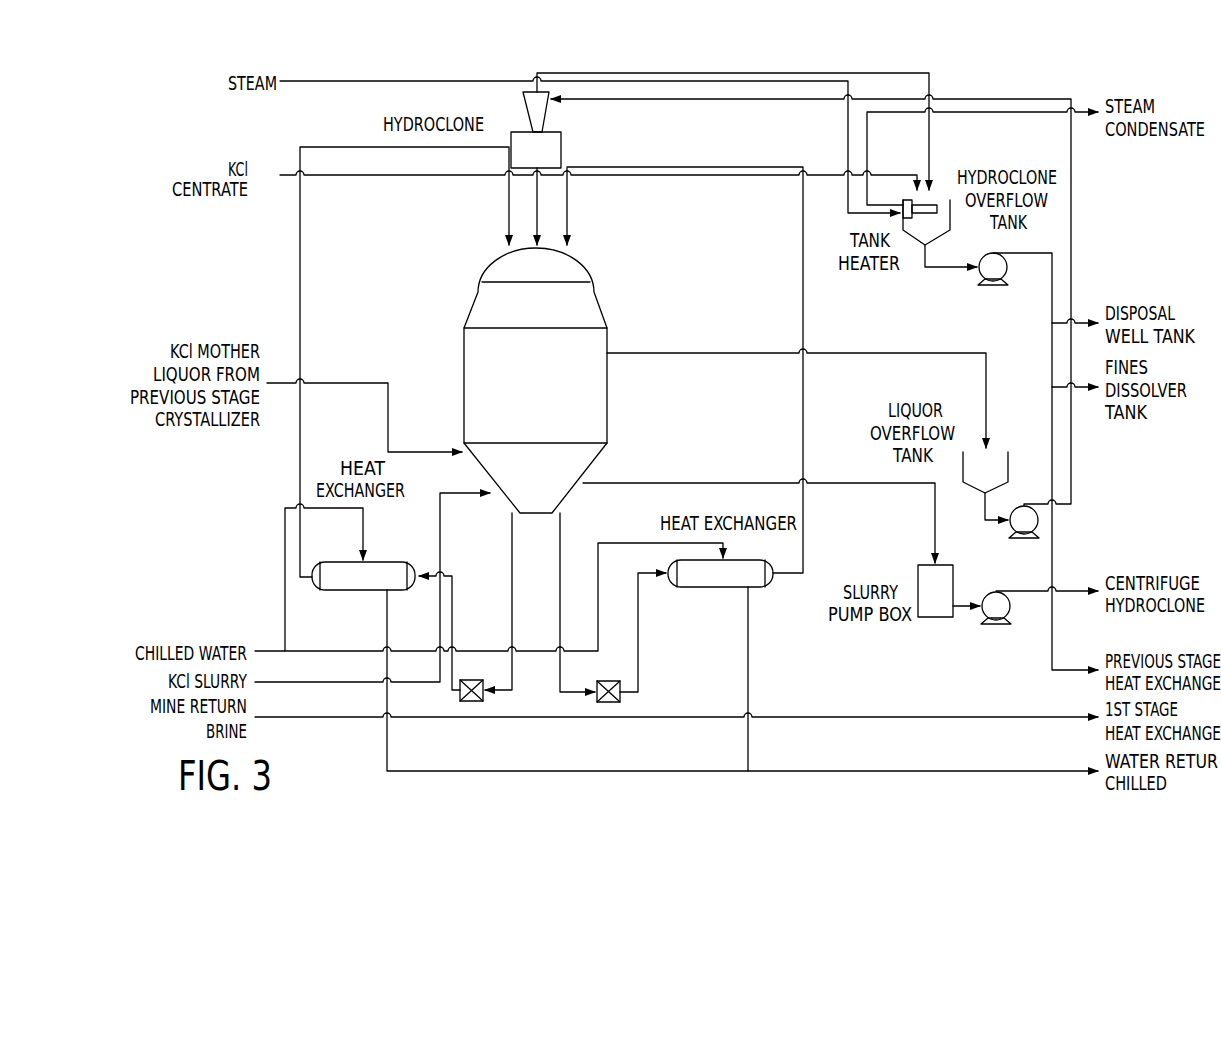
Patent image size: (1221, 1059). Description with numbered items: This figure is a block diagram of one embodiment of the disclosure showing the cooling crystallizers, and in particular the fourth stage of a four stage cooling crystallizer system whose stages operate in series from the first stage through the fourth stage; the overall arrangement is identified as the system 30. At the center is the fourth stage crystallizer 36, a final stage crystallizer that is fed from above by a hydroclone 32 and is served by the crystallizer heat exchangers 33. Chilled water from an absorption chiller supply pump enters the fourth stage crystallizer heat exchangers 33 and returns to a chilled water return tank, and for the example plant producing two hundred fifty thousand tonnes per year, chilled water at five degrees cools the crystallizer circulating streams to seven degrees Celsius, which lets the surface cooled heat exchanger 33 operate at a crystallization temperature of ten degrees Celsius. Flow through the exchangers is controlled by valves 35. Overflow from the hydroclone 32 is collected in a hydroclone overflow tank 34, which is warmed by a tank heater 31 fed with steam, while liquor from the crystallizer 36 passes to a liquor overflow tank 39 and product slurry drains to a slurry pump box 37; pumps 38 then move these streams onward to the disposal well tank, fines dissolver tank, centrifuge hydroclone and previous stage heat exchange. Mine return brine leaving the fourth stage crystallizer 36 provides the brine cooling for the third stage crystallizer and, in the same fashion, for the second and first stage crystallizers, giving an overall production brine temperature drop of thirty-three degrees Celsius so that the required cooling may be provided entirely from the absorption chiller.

The final stage crystallization system 30 is at (992, 80).
The tank heater 31 is at (908, 248).
The hydroclone 32 is at (547, 112).
The heat exchanger 33 is at (345, 592).
The hydroclone overflow tank 34 is at (941, 192).
The valve 35 is at (472, 703).
The fourth stage crystallizer 36 is at (610, 385).
The slurry pump box 37 is at (934, 560).
The pump 38 is at (995, 286).
The liquor overflow tank 39 is at (1010, 463).